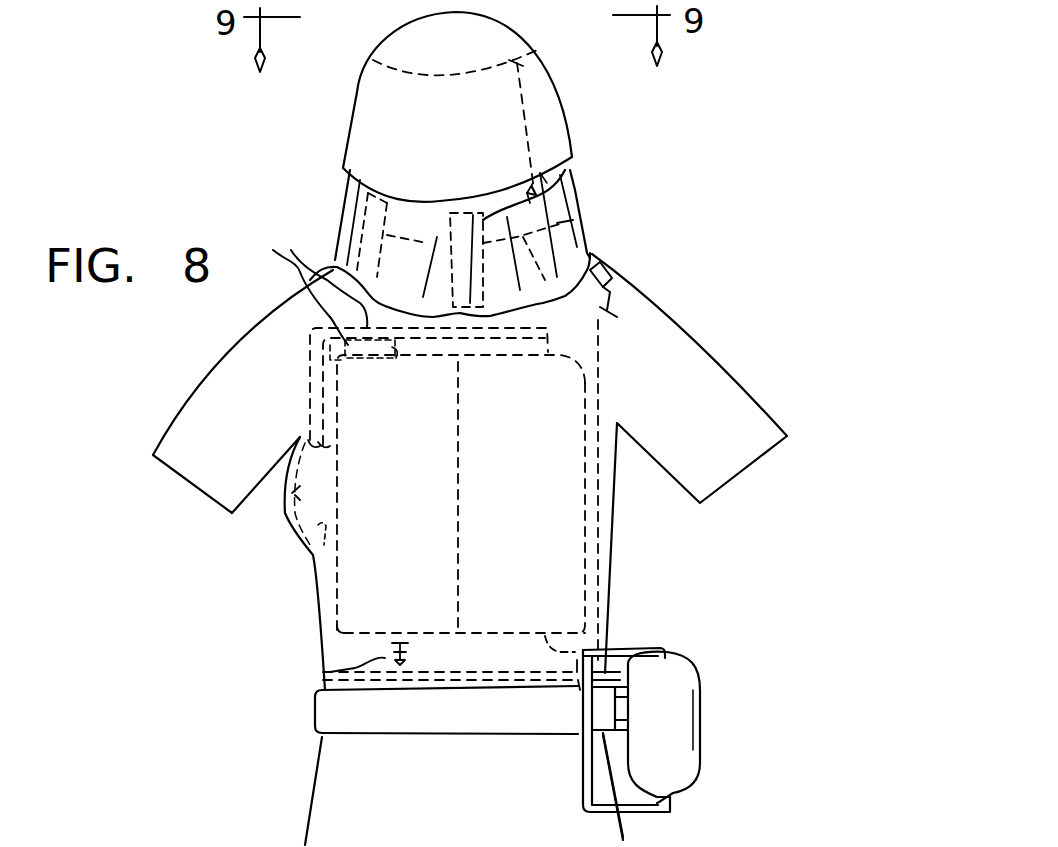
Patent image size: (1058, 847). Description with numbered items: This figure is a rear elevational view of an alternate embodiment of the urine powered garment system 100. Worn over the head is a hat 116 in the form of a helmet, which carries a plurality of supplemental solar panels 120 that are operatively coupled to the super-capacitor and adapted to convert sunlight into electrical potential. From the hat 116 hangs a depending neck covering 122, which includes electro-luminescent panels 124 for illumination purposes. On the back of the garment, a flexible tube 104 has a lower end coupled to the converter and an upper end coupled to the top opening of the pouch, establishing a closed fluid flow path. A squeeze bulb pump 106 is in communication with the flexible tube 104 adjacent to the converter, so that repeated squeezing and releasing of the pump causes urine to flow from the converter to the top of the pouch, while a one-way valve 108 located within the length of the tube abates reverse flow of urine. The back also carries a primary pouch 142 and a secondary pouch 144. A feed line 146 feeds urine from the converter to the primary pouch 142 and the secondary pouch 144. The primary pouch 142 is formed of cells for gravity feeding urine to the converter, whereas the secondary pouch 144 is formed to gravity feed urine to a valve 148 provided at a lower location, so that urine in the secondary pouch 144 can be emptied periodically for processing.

The urine powered garment system 100 is at (750, 293).
The flexible tube 104 is at (307, 370).
The squeeze bulb pump 106 is at (297, 490).
The one-way valve 108 is at (230, 620).
The hat 116 is at (560, 118).
The supplemental solar panels 120 is at (377, 110).
The depending neck covering 122 is at (590, 255).
The electro-luminescent panels 124 is at (560, 220).
The primary pouch 142 is at (533, 477).
The secondary pouch 144 is at (408, 481).
The feed line 146 is at (585, 760).
The valve 148 is at (325, 672).